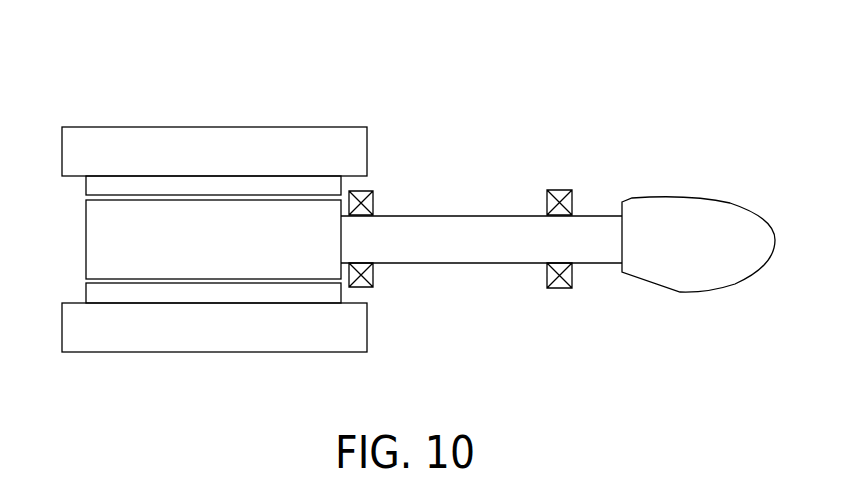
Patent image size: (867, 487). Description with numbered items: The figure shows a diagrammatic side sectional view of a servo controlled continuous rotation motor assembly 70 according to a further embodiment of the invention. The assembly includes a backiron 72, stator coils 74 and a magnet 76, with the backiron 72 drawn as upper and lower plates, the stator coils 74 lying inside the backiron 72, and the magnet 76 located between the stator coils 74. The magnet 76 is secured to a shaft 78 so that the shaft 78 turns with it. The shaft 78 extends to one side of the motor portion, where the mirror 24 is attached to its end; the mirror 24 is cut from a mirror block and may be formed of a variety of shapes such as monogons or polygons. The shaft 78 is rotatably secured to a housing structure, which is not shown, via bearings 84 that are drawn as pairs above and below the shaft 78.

The servo controlled continuous rotation motor assembly 70 is at (191, 64).
The backiron 72 is at (273, 127).
The stator coils 74 is at (152, 185).
The magnet 76 is at (96, 220).
The shaft 78 is at (484, 253).
The bearings 84 is at (375, 197).
The mirror 24 is at (683, 211).